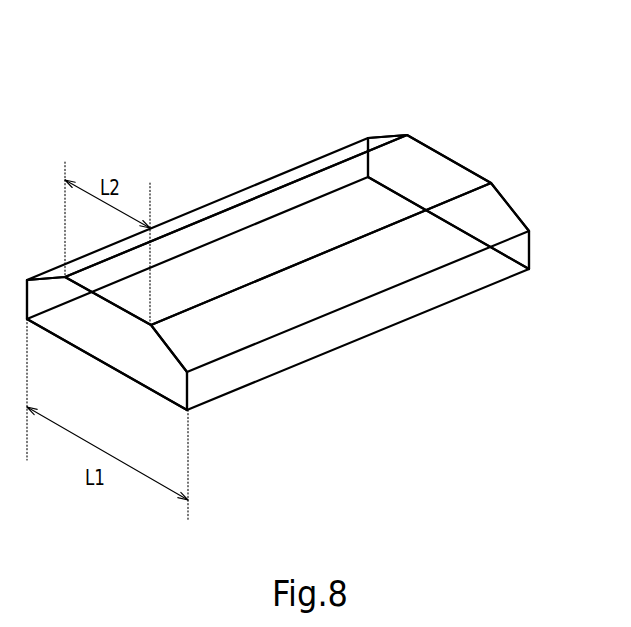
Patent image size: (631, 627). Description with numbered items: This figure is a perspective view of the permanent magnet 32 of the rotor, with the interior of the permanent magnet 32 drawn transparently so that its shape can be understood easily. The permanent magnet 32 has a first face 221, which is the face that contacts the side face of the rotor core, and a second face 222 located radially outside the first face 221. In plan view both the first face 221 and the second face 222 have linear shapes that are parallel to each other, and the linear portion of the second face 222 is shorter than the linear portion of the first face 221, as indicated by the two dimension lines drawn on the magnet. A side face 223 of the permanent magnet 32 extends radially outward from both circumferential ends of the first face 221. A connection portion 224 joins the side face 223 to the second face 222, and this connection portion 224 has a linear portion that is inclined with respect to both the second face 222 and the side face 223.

The permanent magnet 32 is at (315, 215).
The first face 221 is at (103, 364).
The second face 222 is at (440, 150).
The side face 223 is at (530, 243).
The connection portion 224 is at (513, 210).